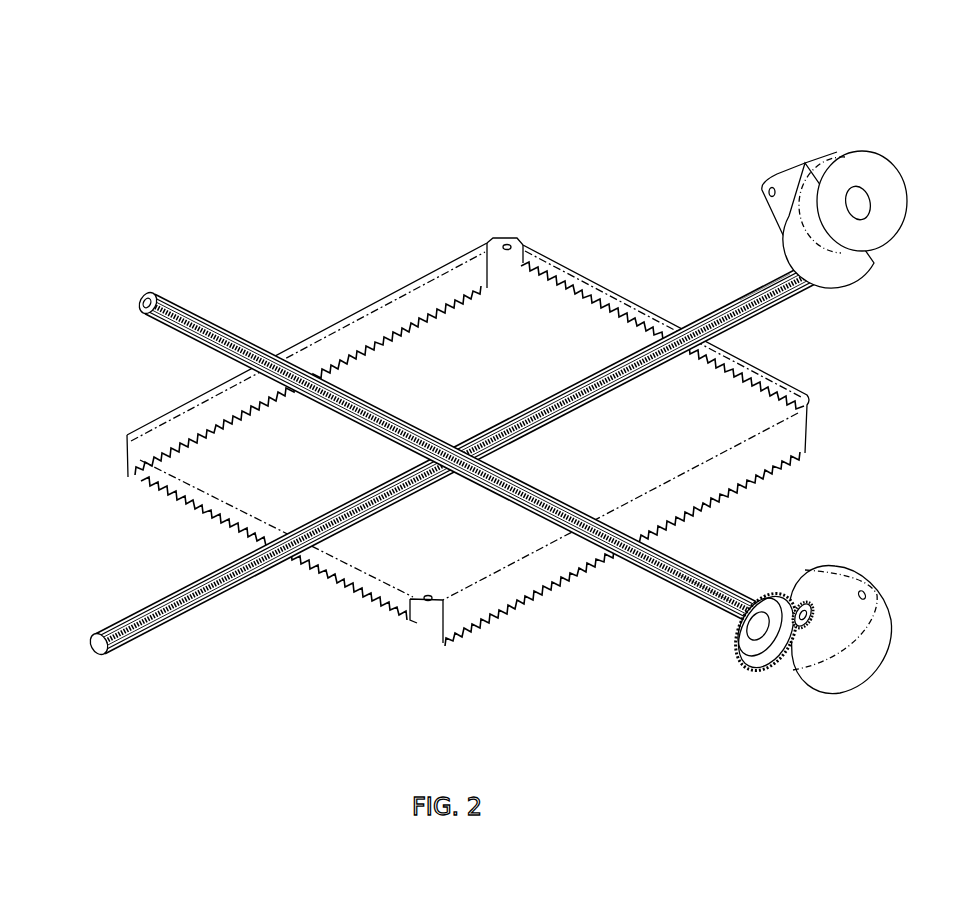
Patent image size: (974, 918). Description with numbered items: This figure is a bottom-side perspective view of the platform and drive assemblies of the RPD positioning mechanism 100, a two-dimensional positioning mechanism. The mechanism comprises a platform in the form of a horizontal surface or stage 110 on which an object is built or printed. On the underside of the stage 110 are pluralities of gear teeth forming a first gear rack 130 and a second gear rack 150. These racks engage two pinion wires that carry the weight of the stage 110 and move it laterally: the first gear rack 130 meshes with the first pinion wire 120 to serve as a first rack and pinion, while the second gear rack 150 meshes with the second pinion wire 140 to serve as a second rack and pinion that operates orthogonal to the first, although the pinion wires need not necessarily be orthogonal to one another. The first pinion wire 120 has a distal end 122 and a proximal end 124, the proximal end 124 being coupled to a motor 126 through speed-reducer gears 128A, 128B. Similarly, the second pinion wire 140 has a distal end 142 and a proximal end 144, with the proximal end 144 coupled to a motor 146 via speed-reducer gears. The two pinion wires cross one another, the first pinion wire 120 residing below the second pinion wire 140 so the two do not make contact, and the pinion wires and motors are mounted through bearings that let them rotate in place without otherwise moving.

The RPD positioning mechanism 100 is at (242, 127).
The stage 110 is at (618, 466).
The first pinion wire 120 is at (224, 320).
The distal end 122 is at (167, 320).
The proximal end 124 is at (694, 607).
The motor 126 is at (827, 693).
The speed-reducer gear 128A is at (806, 630).
The speed-reducer gear 128B is at (748, 657).
The first gear rack 130 is at (226, 439).
The second pinion wire 140 is at (170, 623).
The distal end 142 is at (98, 655).
The proximal end 144 is at (760, 278).
The motor 146 is at (800, 187).
The second gear rack 150 is at (556, 290).